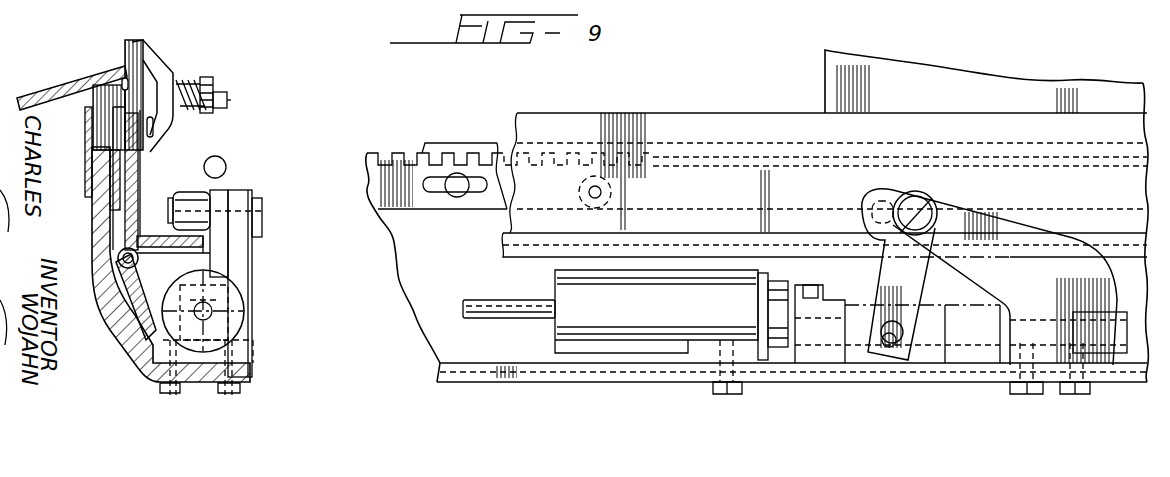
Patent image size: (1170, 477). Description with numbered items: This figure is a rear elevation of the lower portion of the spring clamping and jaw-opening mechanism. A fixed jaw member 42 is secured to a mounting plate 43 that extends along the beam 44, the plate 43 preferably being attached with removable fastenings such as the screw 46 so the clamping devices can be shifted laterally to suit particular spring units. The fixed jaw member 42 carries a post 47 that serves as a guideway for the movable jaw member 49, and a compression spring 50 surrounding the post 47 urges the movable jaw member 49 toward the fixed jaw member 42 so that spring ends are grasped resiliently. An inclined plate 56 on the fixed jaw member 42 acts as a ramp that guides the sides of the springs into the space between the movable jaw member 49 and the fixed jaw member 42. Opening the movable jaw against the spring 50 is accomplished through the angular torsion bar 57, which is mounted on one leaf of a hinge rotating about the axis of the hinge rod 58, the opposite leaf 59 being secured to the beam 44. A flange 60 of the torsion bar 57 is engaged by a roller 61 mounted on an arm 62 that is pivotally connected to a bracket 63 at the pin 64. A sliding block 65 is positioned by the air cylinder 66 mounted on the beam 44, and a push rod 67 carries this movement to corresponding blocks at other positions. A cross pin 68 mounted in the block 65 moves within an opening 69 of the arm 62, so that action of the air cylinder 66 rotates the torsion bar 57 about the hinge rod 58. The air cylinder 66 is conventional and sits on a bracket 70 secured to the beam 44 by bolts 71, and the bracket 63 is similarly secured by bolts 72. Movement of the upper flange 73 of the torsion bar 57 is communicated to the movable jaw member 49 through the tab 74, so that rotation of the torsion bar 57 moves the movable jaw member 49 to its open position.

The fixed jaw member 42 is at (110, 92).
The mounting plate 43 is at (92, 148).
The beam 44 is at (650, 384).
The screw 46 is at (87, 117).
The post 47 is at (229, 100).
The movable jaw member 49 is at (155, 68).
The spring 50 is at (190, 105).
The inclined plate 56 is at (27, 98).
The angular torsion bar 57 is at (133, 200).
The hinge rod 58 is at (118, 258).
The hinge leaf 59 is at (133, 298).
The flange 60 is at (225, 245).
The roller 61 is at (860, 217).
The arm 62 is at (885, 267).
The bracket 63 is at (978, 218).
The pin 64 is at (933, 210).
The sliding block 65 is at (838, 300).
The air cylinder 66 is at (662, 318).
The push rod 67 is at (975, 333).
The cross pin 68 is at (893, 352).
The opening 69 is at (880, 327).
The bracket 70 is at (760, 364).
The bolt 71 is at (713, 388).
The bolt 72 is at (1013, 387).
The upper flange 73 is at (123, 157).
The tab 74 is at (160, 123).